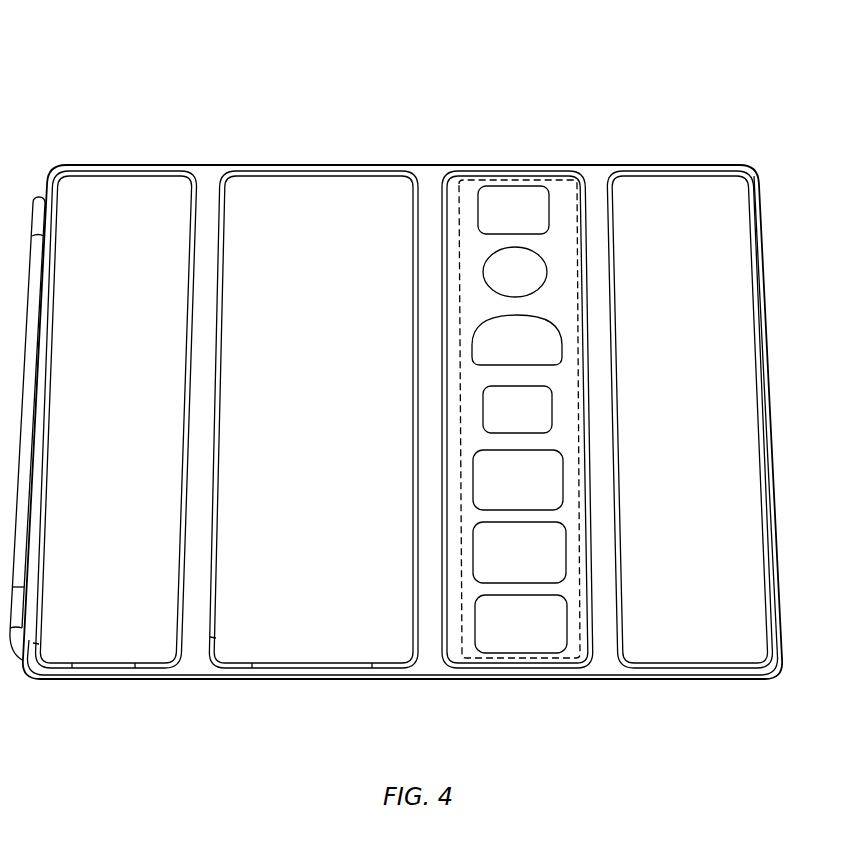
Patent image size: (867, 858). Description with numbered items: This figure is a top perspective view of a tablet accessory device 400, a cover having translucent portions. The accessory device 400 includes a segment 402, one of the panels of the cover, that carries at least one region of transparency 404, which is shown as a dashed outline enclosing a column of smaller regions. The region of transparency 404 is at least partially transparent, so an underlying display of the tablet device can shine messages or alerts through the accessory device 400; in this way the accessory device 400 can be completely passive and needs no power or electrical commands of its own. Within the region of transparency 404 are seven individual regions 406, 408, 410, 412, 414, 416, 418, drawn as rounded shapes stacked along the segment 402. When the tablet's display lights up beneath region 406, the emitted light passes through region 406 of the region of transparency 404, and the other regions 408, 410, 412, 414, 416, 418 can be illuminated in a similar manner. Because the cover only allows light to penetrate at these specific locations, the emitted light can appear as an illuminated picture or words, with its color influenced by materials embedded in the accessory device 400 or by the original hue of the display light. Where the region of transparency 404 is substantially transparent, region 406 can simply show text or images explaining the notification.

The tablet accessory device 400 is at (90, 62).
The segment 402 is at (440, 173).
The region of transparency 404 is at (547, 177).
The region 406 is at (507, 634).
The region 408 is at (504, 564).
The region 410 is at (502, 492).
The region 412 is at (502, 419).
The region 414 is at (502, 350).
The region 416 is at (502, 281).
The region 418 is at (500, 219).